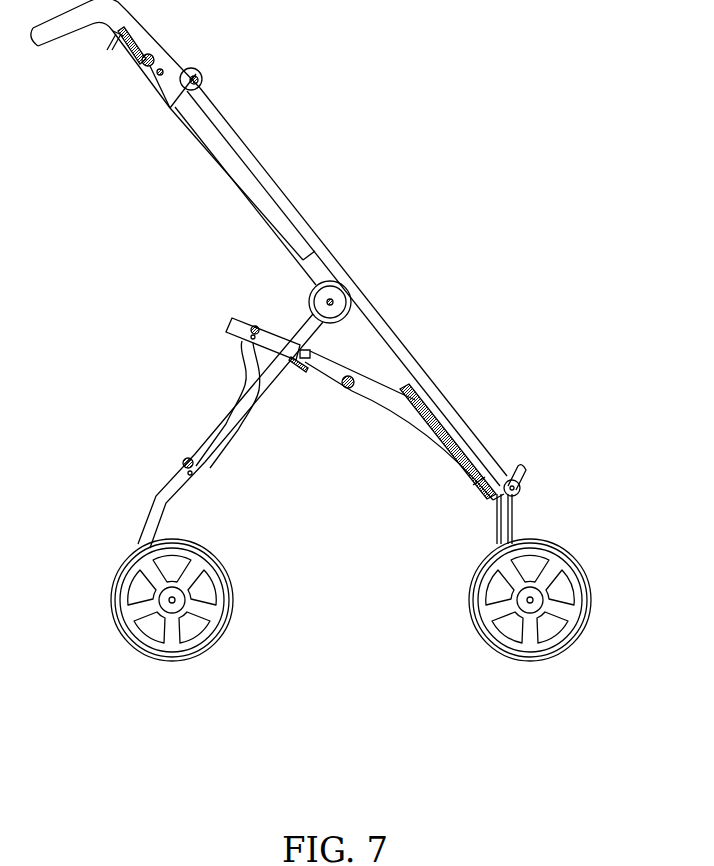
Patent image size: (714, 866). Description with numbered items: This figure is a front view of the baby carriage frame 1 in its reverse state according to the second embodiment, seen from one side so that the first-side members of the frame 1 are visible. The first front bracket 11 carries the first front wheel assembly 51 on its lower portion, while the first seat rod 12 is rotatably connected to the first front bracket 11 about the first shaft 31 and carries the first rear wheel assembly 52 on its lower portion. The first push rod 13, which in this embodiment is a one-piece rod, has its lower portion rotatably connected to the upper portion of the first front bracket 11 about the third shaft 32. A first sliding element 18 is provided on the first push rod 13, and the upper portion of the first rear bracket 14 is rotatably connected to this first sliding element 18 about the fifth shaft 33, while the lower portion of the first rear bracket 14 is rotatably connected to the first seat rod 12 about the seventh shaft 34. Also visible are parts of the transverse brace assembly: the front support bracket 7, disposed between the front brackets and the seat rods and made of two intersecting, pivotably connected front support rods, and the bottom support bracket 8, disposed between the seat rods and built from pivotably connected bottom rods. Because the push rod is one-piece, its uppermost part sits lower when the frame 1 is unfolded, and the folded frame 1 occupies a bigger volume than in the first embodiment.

The frame 1 is at (393, 232).
The front support bracket 7 is at (237, 379).
The bottom support bracket 8 is at (445, 427).
The first front bracket 11 is at (158, 510).
The first seat rod 12 is at (393, 406).
The first push rod 13 is at (183, 131).
The first rear bracket 14 is at (293, 210).
The first sliding element 18 is at (163, 80).
The first shaft 31 is at (347, 386).
The third shaft 32 is at (332, 301).
The fifth shaft 33 is at (200, 74).
The seventh shaft 34 is at (521, 482).
The first front wheel assembly 51 is at (232, 621).
The first rear wheel assembly 52 is at (480, 639).